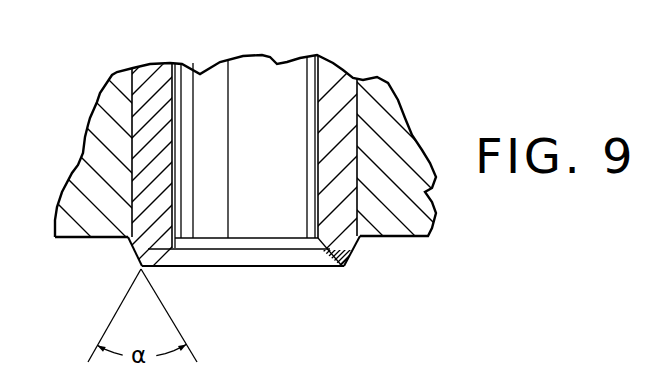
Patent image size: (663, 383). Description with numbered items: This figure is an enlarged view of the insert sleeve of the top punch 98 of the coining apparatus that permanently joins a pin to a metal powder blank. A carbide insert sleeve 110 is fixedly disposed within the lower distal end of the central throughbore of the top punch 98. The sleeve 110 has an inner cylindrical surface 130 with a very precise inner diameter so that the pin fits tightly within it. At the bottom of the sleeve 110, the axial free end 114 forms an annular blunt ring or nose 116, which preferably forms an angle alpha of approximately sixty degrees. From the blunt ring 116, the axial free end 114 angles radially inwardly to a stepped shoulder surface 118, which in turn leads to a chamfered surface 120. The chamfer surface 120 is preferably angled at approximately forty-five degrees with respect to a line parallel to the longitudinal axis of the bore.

The top punch 98 is at (90, 123).
The carbide insert sleeve 110 is at (348, 88).
The inner cylindrical surface 130 is at (312, 80).
The chamfered surface 120 is at (173, 250).
The annular blunt ring 116 is at (344, 267).
The stepped shoulder surface 118 is at (322, 262).
The axial free end 114 is at (340, 268).